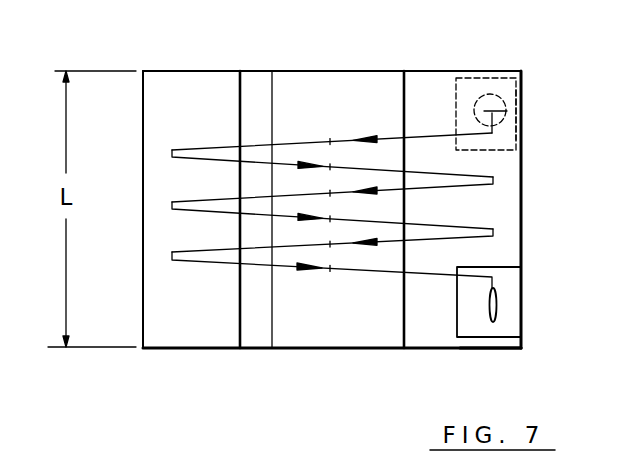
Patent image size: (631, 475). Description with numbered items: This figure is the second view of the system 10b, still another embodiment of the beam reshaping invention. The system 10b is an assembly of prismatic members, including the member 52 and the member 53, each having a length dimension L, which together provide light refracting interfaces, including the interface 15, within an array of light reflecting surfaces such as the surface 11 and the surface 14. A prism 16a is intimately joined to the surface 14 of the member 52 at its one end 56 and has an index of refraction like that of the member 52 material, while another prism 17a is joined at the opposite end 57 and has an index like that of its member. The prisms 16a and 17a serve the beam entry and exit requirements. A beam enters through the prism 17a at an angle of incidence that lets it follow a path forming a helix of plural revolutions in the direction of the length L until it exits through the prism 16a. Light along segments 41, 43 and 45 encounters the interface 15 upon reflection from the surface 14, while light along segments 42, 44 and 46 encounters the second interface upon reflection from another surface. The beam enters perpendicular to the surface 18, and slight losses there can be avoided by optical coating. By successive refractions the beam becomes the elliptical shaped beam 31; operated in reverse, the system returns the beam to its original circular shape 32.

The system 10b is at (128, 385).
The light reflecting surface 11 is at (152, 106).
The light reflecting surface 14 is at (515, 182).
The light beam refracting interface 15 is at (352, 82).
The prism 16a is at (515, 290).
The prism 17a is at (513, 127).
The surface 18 is at (254, 82).
The elliptical shaped beam 31 is at (497, 310).
The circular shape 32 is at (507, 112).
The segment of the optical path 41 is at (343, 140).
The segment of the optical path 42 is at (227, 163).
The segment of the optical path 43 is at (437, 190).
The segment of the optical path 44 is at (215, 213).
The segment of the optical path 45 is at (457, 240).
The segment of the optical path 46 is at (358, 273).
The prismatic member 52 is at (350, 335).
The prismatic member 53 is at (167, 83).
The end 56 is at (503, 350).
The end 57 is at (478, 70).